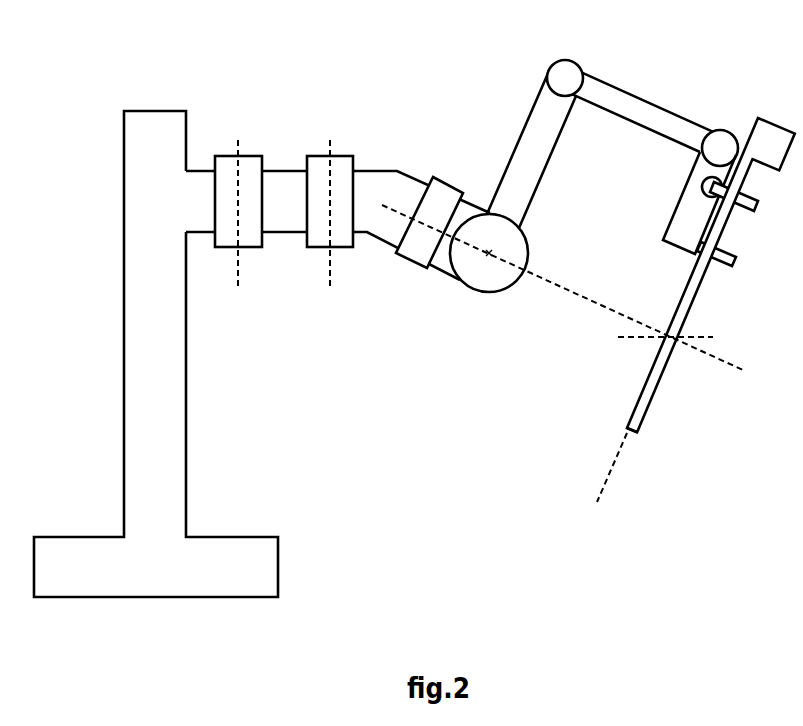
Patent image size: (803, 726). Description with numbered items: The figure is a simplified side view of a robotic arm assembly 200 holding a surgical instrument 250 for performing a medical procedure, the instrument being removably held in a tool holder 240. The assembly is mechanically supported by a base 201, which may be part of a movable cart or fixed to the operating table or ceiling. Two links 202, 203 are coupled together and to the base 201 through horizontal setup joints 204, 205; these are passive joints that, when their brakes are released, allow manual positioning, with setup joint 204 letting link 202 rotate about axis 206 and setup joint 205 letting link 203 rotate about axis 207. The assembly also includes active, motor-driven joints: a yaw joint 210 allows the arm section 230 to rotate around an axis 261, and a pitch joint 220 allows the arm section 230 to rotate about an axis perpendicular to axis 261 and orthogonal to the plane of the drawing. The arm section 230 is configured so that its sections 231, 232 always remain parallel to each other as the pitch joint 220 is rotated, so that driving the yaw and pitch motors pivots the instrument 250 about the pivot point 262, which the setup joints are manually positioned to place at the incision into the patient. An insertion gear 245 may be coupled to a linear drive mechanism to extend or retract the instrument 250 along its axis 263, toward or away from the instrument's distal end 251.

The robotic arm assembly 200 is at (412, 60).
The base 201 is at (212, 467).
The link 202 is at (284, 236).
The link 203 is at (402, 167).
The setup joint 204 is at (256, 156).
The setup joint 205 is at (348, 156).
The axis 206 is at (237, 261).
The axis 207 is at (334, 261).
The yaw joint 210 is at (453, 183).
The pitch joint 220 is at (468, 283).
The arm section 230 is at (654, 87).
The section 231 is at (548, 168).
The section 232 is at (690, 180).
The tool holder 240 is at (758, 210).
The insertion gear 245 is at (706, 194).
The surgical instrument 250 is at (616, 381).
The instrument distal tip 251 is at (646, 427).
The axis 261 is at (740, 360).
The pivot point 262 is at (666, 331).
The axis 263 is at (612, 461).